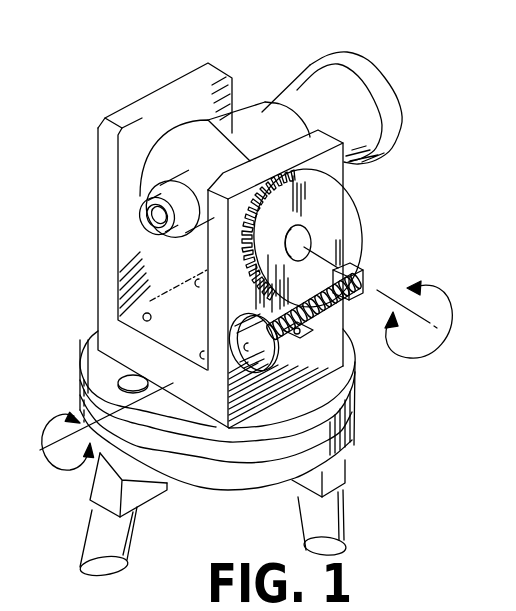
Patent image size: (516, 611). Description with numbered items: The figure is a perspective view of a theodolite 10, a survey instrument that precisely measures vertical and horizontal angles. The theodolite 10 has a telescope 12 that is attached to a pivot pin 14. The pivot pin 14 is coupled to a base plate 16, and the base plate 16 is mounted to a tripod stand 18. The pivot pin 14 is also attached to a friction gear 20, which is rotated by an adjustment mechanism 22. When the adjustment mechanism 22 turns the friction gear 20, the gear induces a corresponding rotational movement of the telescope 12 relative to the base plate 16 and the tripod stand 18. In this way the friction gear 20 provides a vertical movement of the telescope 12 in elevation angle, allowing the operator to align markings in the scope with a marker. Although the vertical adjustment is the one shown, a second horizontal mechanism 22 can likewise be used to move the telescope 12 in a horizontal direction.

The theodolite 10 is at (135, 77).
The telescope 12 is at (296, 92).
The pivot pin 14 is at (322, 228).
The base plate 16 is at (323, 322).
The tripod stand 18 is at (338, 452).
The friction gear 20 is at (330, 190).
The adjustment mechanism 22 is at (293, 348).